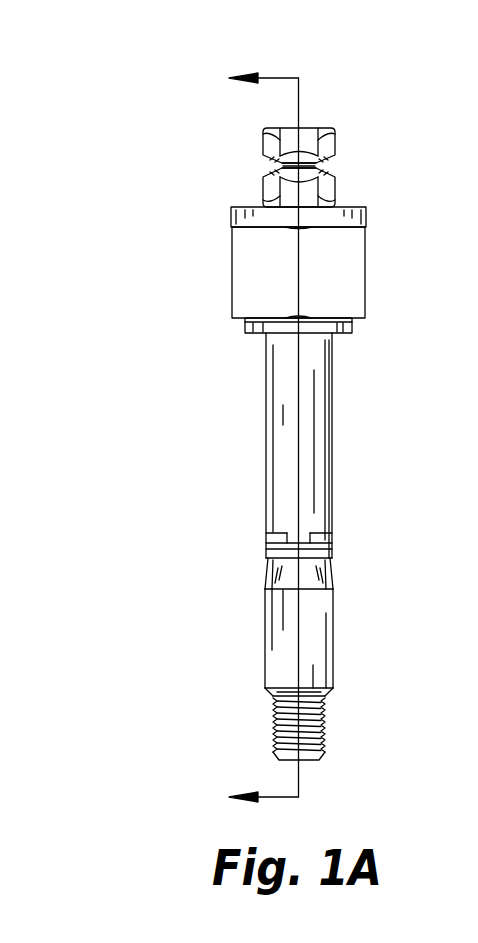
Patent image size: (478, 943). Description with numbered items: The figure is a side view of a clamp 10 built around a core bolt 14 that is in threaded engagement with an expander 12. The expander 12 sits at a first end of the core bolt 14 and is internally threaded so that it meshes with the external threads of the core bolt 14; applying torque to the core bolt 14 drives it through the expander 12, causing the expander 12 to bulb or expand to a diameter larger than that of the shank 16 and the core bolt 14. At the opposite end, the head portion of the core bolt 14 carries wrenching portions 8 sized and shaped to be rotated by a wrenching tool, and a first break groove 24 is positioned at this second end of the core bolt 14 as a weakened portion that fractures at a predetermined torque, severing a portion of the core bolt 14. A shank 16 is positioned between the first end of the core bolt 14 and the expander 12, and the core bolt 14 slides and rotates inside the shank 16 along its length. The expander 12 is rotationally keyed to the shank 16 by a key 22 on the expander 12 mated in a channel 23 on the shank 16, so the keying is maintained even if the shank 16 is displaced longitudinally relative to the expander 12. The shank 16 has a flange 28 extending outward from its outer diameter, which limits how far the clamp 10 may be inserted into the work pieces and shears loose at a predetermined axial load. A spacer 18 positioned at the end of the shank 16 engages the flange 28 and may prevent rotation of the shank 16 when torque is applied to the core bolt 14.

The wrenching portions 8 is at (300, 142).
The clamp 10 is at (154, 557).
The expander 12 is at (327, 625).
The core bolt 14 is at (331, 196).
The shank 16 is at (318, 430).
The spacer 18 is at (357, 268).
The key 22 is at (270, 541).
The channel 23 is at (313, 541).
The first break groove 24 is at (272, 165).
The flange 28 is at (352, 327).